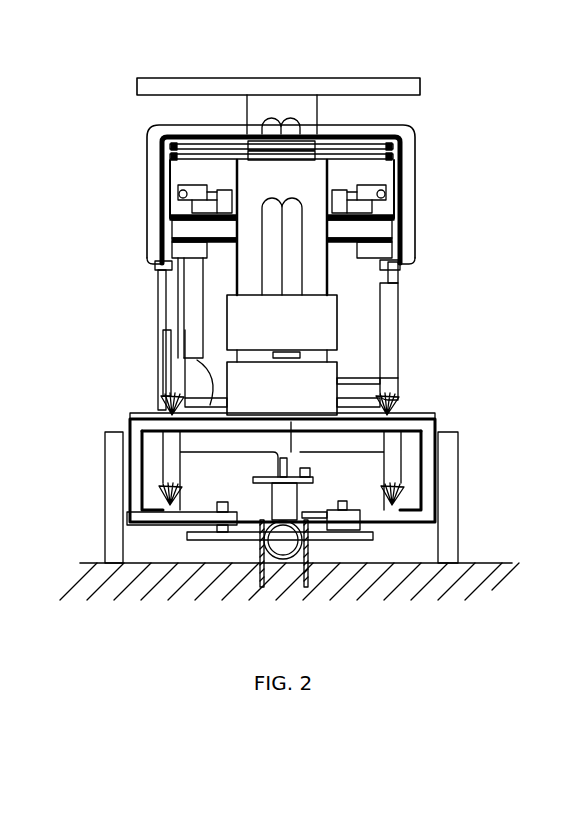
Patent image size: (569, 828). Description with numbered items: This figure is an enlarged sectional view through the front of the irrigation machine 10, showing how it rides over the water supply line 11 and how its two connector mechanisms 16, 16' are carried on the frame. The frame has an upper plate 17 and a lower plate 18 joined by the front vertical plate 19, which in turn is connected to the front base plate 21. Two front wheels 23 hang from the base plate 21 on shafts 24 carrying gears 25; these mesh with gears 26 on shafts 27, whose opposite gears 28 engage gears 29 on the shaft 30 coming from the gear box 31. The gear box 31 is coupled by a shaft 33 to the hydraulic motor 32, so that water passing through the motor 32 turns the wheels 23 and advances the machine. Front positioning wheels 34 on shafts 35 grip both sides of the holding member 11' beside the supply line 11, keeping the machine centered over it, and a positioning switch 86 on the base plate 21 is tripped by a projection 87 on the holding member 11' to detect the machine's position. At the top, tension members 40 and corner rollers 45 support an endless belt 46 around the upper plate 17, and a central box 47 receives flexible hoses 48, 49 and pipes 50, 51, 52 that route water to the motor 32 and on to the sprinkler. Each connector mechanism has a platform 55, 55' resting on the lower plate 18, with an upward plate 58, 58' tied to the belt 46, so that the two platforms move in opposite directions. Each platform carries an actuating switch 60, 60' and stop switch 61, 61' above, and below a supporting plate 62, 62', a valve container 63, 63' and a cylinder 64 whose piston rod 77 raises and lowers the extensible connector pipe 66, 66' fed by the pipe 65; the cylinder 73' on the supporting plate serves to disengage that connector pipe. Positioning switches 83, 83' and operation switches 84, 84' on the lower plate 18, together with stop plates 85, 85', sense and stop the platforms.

The irrigation machine 10 is at (362, 65).
The water supply line 11 is at (326, 511).
The holding member 11' is at (271, 578).
The connector mechanism 16 is at (92, 315).
The connector mechanism 16' is at (466, 281).
The upper plate 17 is at (394, 130).
The lower plate 18 is at (385, 250).
The front vertical plate 19 is at (360, 190).
The front base plate 21 is at (428, 426).
The front wheel 23 is at (112, 520).
The shaft 24 is at (150, 496).
The gear 25 is at (150, 525).
The gear 26 is at (160, 490).
The shaft 27 is at (165, 455).
The gear 28 is at (142, 418).
The gear 29 is at (158, 400).
The shaft 30 is at (150, 390).
The gear box 31 is at (271, 400).
The hydraulic motor 32 is at (282, 322).
The shaft 33 is at (290, 355).
The front positioning wheel 34 is at (375, 536).
The shaft 35 is at (230, 505).
The tension member 40 is at (266, 178).
The roller 45 is at (448, 130).
The endless belt 46 is at (205, 150).
The box 47 is at (262, 107).
The flexible hose 48 is at (150, 138).
The flexible hose 49 is at (340, 130).
The pipe 50 is at (295, 227).
The pipe 51 is at (265, 245).
The pipe 52 is at (402, 80).
The platform 55 is at (151, 240).
The platform 55' is at (394, 234).
The plate 58 is at (232, 156).
The plate 58' is at (423, 150).
The actuating switch 60 is at (150, 180).
The actuating switch 60' is at (410, 185).
The stop switch 61 is at (205, 188).
The stop switch 61' is at (409, 185).
The supporting plate 62 is at (115, 335).
The supporting plate 62' is at (422, 285).
The valve container 63 is at (131, 255).
The valve container 63' is at (433, 262).
The cylinder 64 is at (195, 315).
The pipe 65 is at (178, 300).
The extensible connector pipe 66 is at (242, 339).
The extensible connector pipe 66' is at (441, 319).
The cylinder 73' is at (413, 371).
The piston rod 77 is at (205, 360).
The positioning switch 83 is at (163, 211).
The positioning switch 83' is at (350, 211).
The operation switch 84 is at (127, 192).
The operation switch 84' is at (434, 203).
The stop plate 85 is at (224, 124).
The stop plate 85' is at (281, 165).
The positioning switch 86 is at (333, 510).
The projection 87 is at (310, 510).